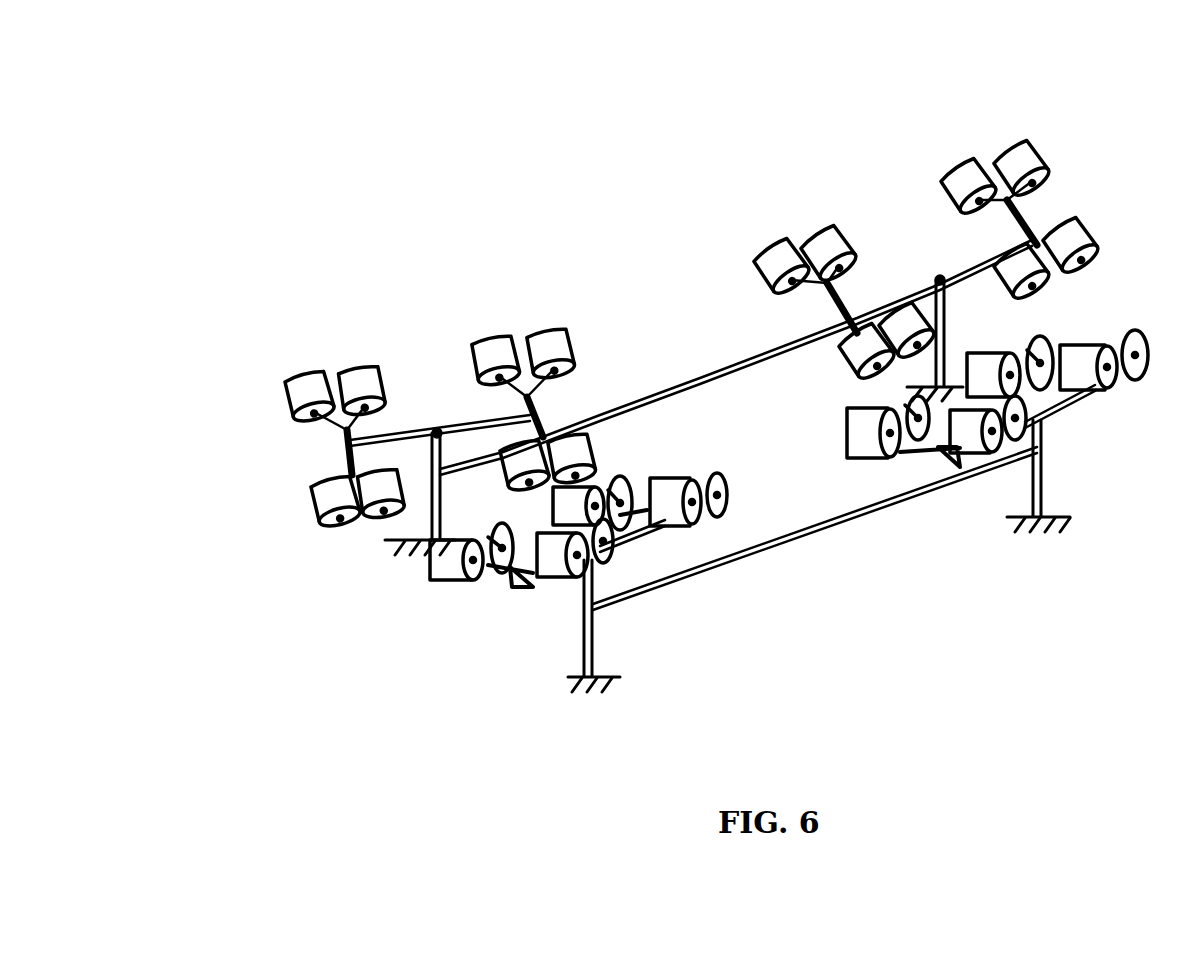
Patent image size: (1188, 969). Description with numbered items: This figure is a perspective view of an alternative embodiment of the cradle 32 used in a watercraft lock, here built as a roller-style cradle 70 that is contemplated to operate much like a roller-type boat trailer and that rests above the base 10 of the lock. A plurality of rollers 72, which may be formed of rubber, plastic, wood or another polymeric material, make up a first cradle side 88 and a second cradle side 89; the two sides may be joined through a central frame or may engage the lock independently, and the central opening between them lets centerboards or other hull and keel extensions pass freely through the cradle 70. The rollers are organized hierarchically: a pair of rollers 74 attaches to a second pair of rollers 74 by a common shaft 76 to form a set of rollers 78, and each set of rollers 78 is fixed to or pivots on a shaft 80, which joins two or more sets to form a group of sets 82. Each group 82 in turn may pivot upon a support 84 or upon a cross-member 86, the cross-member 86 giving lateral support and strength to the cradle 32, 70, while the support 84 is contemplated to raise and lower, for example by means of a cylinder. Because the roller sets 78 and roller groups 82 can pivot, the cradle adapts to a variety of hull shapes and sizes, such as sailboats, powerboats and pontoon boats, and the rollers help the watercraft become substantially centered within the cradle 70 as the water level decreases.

The base 10 is at (480, 655).
The cradle 32 is at (612, 195).
The roller-style cradle 70 is at (679, 185).
The rollers 72 is at (1038, 148).
The pair of rollers 74 is at (955, 135).
The common shaft 76 is at (1040, 232).
The set of rollers 78 is at (1055, 93).
The shaft 80 is at (830, 205).
The group of sets 82 is at (884, 160).
The support 84 is at (605, 630).
The cross-member 86 is at (712, 396).
The first cradle side 88 is at (226, 572).
The second cradle side 89 is at (301, 714).